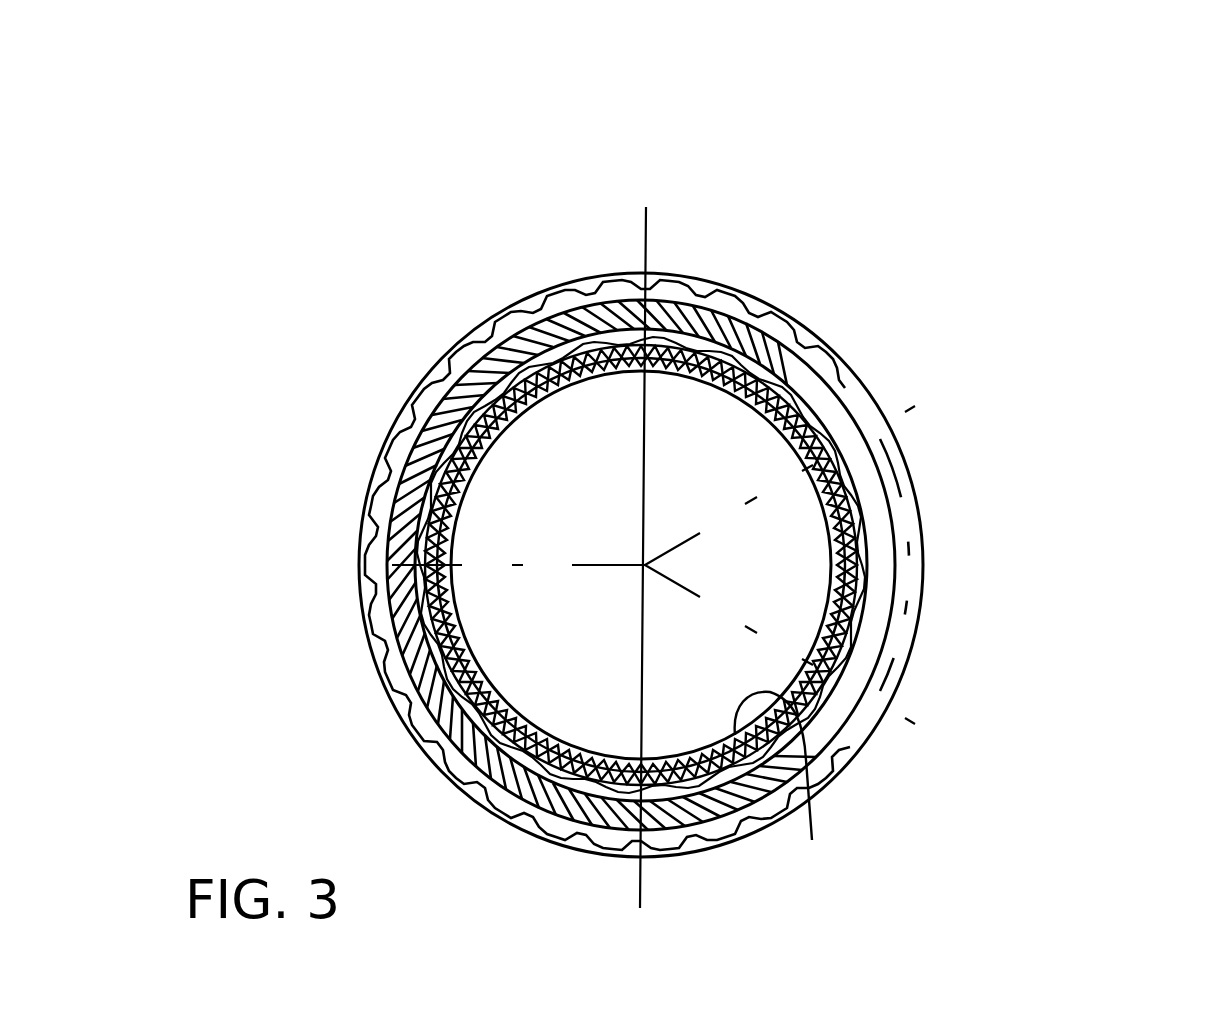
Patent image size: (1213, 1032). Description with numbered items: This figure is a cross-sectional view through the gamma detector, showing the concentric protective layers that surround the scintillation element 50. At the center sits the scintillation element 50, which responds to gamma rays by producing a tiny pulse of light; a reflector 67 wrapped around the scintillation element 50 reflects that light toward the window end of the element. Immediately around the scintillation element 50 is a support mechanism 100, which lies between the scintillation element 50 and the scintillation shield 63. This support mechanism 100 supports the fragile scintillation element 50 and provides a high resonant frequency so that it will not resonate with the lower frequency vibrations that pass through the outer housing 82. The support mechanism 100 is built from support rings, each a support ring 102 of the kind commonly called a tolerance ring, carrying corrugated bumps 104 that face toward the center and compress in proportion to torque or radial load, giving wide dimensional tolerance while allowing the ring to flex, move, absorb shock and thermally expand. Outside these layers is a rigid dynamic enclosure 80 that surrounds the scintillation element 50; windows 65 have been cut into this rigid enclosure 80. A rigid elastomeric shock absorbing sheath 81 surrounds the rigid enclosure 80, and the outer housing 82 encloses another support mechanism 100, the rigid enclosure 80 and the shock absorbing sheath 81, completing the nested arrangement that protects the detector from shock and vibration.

The scintillation element 50 is at (577, 450).
The scintillation shield 63 is at (472, 422).
The windows 65 is at (892, 575).
The reflector 67 is at (812, 840).
The rigid dynamic enclosure 80 is at (432, 700).
The rigid elastomeric shock absorbing sheath 81 is at (722, 290).
The outer housing 82 is at (890, 405).
The support mechanism 100 is at (530, 380).
The support ring 102 is at (870, 492).
The corrugated bumps 104 is at (873, 520).